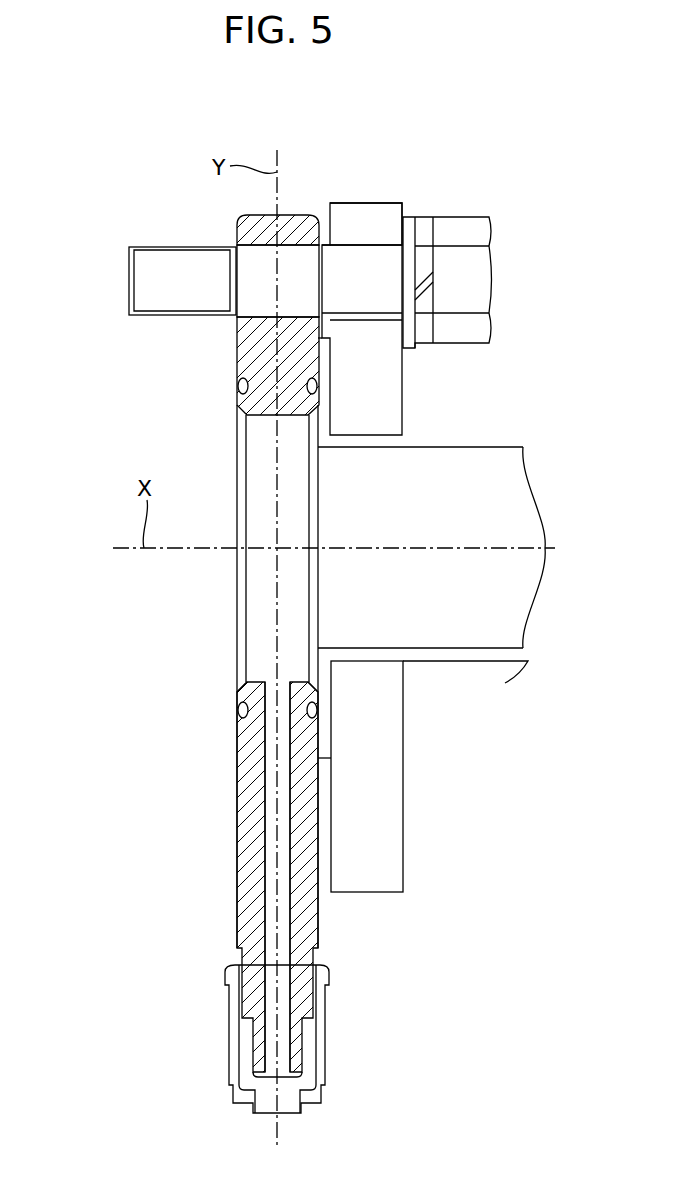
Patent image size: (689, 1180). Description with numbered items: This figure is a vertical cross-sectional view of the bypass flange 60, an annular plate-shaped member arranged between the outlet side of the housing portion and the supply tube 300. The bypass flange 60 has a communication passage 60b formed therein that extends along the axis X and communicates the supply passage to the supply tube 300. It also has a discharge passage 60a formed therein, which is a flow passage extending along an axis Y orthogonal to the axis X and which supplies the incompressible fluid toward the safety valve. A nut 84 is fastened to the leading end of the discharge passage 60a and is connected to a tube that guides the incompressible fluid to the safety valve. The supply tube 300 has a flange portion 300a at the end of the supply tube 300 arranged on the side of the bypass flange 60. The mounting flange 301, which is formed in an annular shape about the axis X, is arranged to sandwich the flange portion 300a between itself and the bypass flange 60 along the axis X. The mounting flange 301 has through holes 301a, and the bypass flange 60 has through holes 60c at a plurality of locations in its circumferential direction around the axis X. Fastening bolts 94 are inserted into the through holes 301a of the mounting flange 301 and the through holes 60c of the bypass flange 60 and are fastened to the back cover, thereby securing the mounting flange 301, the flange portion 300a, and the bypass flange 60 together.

The bypass flange 60 is at (135, 385).
The discharge passage 60a is at (274, 862).
The communication passage 60b is at (255, 680).
The through holes 60c is at (250, 250).
The nut 84 is at (330, 1070).
The fastening bolts 94 is at (492, 280).
The supply tube 300 is at (505, 683).
The flange portion 300a is at (322, 740).
The mounting flange 301 is at (404, 387).
The through holes 301a is at (382, 247).